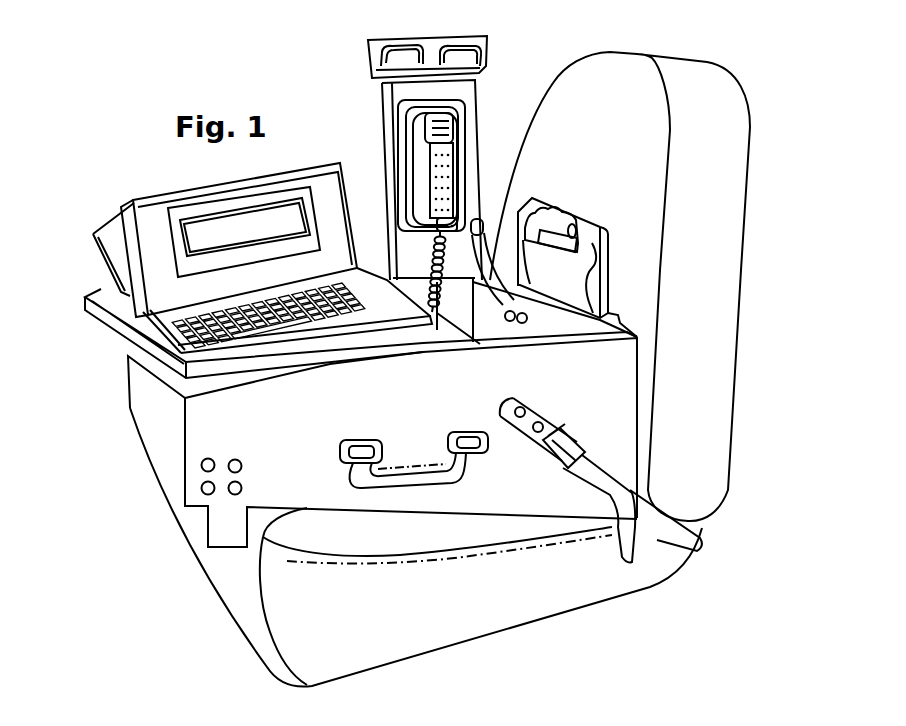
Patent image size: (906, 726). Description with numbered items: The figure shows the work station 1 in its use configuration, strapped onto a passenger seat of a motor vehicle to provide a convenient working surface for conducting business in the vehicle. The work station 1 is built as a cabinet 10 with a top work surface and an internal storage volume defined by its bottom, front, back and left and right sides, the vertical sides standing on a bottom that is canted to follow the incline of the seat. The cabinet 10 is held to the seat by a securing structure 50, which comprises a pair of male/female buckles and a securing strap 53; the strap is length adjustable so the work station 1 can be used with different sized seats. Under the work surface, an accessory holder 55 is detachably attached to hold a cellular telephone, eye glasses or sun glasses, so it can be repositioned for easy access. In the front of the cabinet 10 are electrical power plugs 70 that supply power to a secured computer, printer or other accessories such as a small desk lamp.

The work station 1 is at (112, 469).
The cabinet 10 is at (432, 514).
The securing structure 50 is at (657, 549).
The securing strap 53 is at (686, 553).
The accessory holder 55 is at (460, 102).
The electrical power plug 70 is at (196, 473).